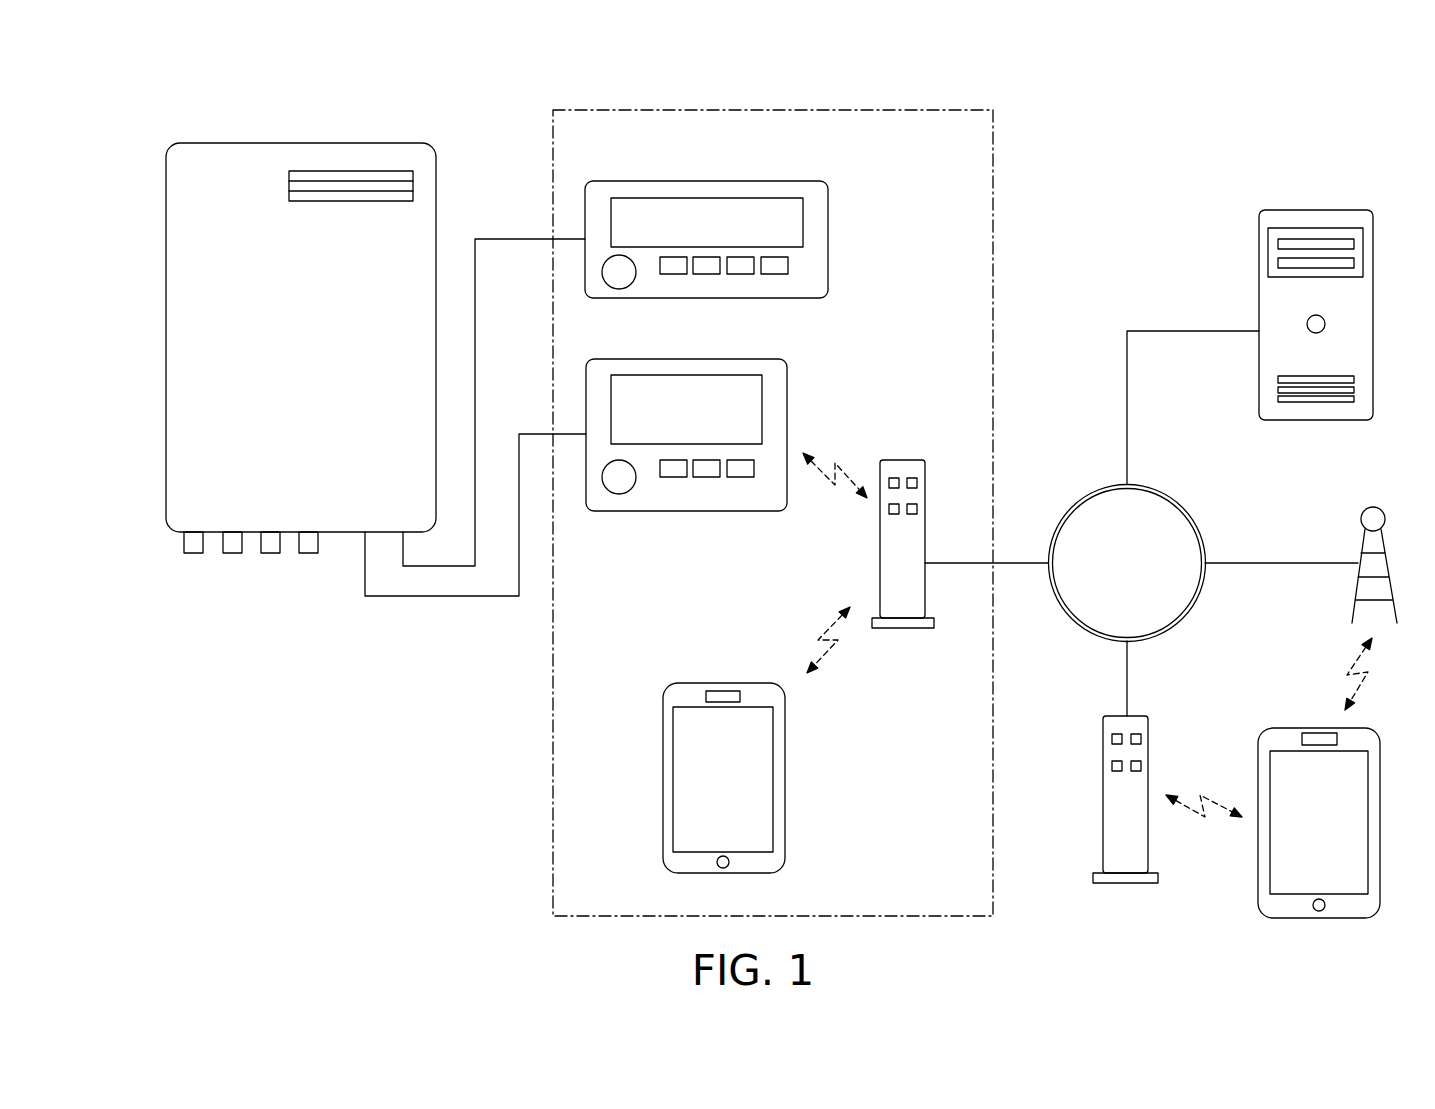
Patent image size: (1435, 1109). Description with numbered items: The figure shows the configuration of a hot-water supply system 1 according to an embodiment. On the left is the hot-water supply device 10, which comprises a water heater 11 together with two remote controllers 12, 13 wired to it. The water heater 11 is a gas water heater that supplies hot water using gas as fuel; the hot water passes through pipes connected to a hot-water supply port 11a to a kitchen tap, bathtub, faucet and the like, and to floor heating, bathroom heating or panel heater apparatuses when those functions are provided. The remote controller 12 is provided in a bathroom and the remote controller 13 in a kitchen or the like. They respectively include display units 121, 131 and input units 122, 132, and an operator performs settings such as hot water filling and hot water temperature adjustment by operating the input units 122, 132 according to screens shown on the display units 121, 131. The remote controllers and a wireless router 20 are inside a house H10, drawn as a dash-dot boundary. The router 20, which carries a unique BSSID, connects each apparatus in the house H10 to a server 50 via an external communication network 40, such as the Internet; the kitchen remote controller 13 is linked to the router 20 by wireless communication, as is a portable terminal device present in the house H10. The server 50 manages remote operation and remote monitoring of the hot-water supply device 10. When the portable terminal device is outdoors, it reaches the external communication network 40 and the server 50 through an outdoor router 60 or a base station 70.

The hot-water supply system 1 is at (1280, 143).
The hot-water supply device 10 is at (167, 121).
The water heater 11 is at (366, 142).
The hot-water supply port 11a is at (322, 573).
The remote controller 12 is at (806, 178).
The display unit 121 is at (722, 204).
The input unit 122 is at (800, 263).
The remote controller 13 is at (788, 378).
The display unit 131 is at (695, 387).
The input unit 132 is at (702, 488).
The router 20 is at (927, 485).
The external communication network 40 is at (1172, 502).
The server 50 is at (1358, 207).
The router 60 is at (1150, 735).
The base station 70 is at (1378, 507).
The house H10 is at (995, 142).